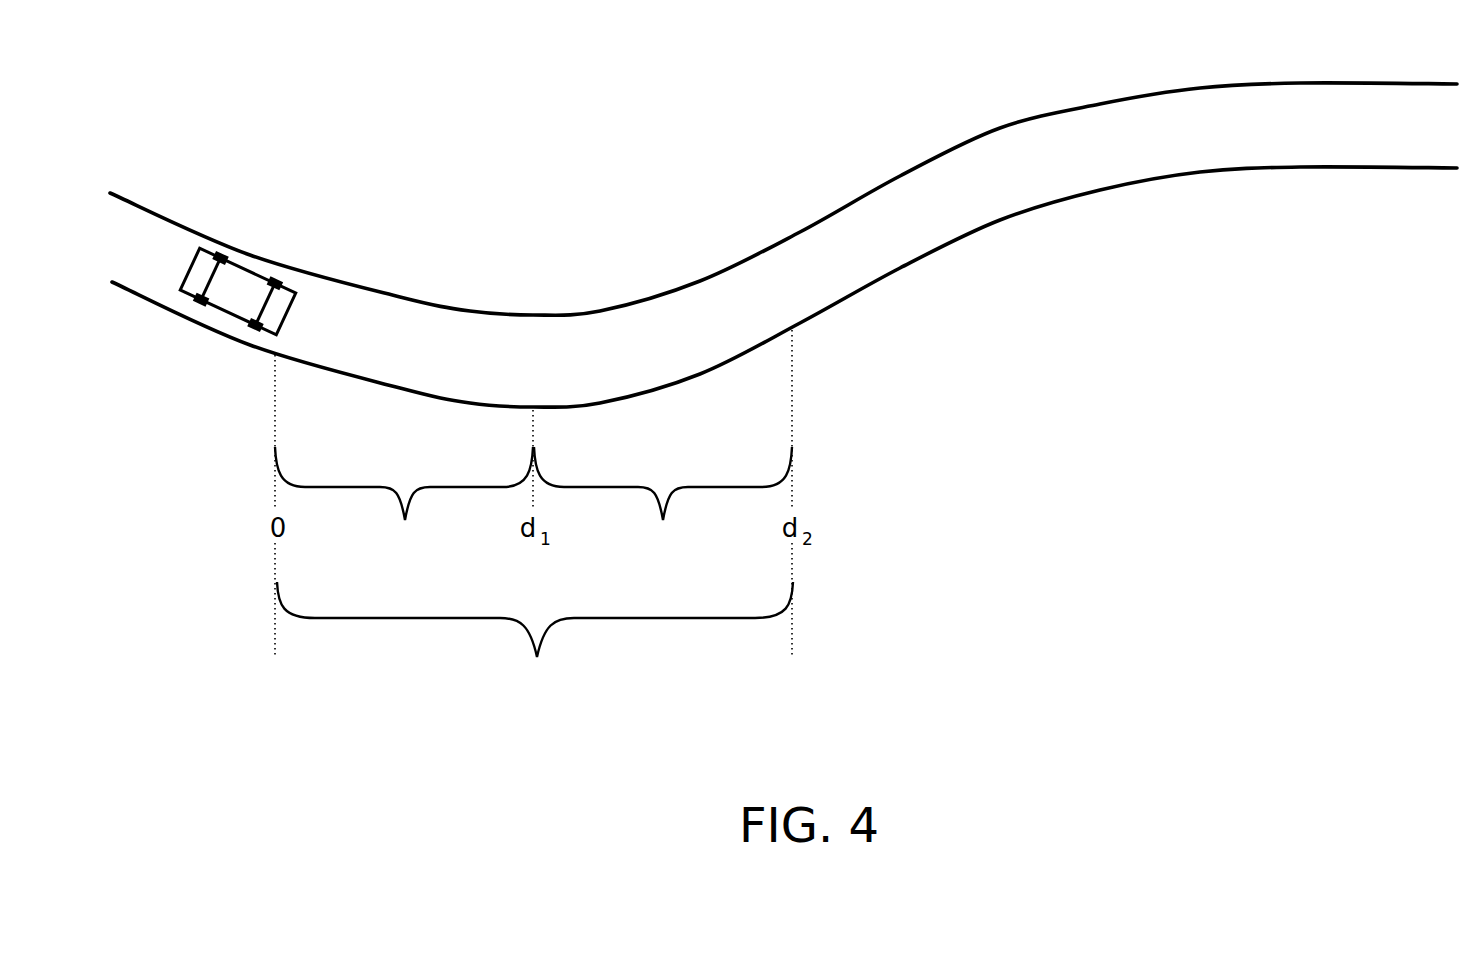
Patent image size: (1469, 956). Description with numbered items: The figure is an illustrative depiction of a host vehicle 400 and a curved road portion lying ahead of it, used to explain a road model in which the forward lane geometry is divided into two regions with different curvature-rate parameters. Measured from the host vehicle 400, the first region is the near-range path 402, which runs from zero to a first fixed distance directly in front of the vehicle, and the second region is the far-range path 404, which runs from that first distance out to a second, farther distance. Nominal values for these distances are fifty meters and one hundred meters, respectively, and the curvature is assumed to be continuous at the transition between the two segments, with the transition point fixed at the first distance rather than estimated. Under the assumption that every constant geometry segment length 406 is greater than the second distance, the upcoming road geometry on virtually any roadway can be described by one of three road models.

The host vehicle 400 is at (277, 235).
The near-range path 402 is at (404, 503).
The far-range path 404 is at (663, 503).
The constant geometry segment length 406 is at (535, 638).